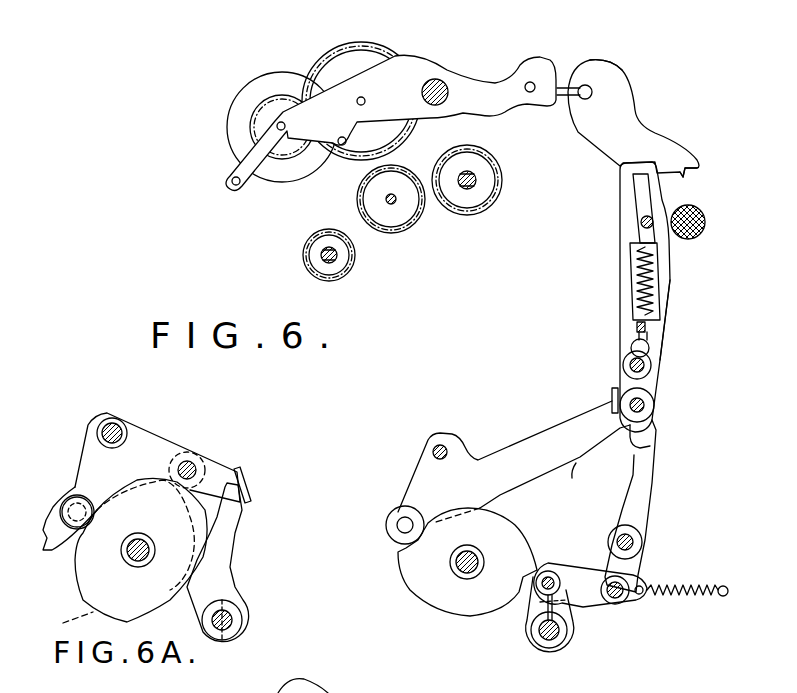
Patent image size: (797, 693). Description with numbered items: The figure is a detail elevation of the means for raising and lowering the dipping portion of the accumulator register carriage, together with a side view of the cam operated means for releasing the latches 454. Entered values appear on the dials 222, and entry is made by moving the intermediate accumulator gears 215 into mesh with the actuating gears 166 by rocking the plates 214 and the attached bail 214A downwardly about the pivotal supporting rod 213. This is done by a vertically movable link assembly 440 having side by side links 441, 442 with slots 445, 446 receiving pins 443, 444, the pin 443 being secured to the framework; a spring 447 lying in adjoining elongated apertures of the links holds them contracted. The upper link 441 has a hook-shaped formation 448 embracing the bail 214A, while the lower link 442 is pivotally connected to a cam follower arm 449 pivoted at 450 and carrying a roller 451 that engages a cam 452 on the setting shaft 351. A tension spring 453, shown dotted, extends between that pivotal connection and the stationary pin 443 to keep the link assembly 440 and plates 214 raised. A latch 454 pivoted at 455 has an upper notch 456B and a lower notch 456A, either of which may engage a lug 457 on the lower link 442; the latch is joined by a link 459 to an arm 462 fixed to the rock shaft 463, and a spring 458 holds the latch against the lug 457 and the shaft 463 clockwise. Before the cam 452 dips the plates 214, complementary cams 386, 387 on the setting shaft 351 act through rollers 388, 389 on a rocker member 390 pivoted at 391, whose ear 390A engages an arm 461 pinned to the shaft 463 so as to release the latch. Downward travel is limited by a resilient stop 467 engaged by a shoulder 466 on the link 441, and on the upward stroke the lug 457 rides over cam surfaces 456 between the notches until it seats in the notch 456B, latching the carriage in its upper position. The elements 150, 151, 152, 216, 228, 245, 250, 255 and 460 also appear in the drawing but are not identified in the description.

In FIG. 6, the gear wheel 150 is at (478, 180).
In FIG. 6, the gear wheel 151 is at (321, 255).
In FIG. 6, the gear shaft 152 is at (386, 199).
In FIG. 6, the actuating gears 166 is at (403, 229).
In FIG. 6, the pivotal supporting rod 213 is at (232, 183).
In FIG. 6, the plates 214 is at (448, 72).
In FIG. 6, the bail 214A is at (558, 68).
In FIG. 6, the intermediate accumulator gears 215 is at (330, 52).
In FIG. 6, the pivot pin 216 is at (277, 126).
In FIG. 6, the dials 222 is at (240, 92).
In FIG. 6, the hub ring 228 is at (252, 133).
In FIG. 6, the pin 245 is at (365, 97).
In FIG. 6, the stud 250 is at (447, 101).
In FIG. 6, the pin 255 is at (531, 82).
In FIG. 6, the setting shaft 351 is at (455, 568).
In FIG. 6A, the setting shaft 351 is at (129, 556).
In FIG. 6A, the cam 386 is at (80, 594).
In FIG. 6A, the cam 387 is at (90, 618).
In FIG. 6A, the roller 388 is at (67, 500).
In FIG. 6A, the roller 389 is at (192, 460).
In FIG. 6A, the rocker member 390 is at (158, 440).
In FIG. 6A, the ear 390A is at (249, 501).
In FIG. 6A, the pivot 391 is at (118, 428).
In FIG. 6, the link assembly 440 is at (620, 254).
In FIG. 6, the link 441 is at (640, 116).
In FIG. 6, the link 442 is at (656, 385).
In FIG. 6, the pin 443 is at (653, 222).
In FIG. 6, the pin 444 is at (645, 365).
In FIG. 6, the slot 445 is at (656, 183).
In FIG. 6, the slot 446 is at (649, 348).
In FIG. 6, the spring 447 is at (646, 282).
In FIG. 6, the hook-shaped formation 448 is at (623, 72).
In FIG. 6, the cam follower arm 449 is at (538, 432).
In FIG. 6, the pivot 450 is at (446, 448).
In FIG. 6, the roller 451 is at (386, 524).
In FIG. 6, the cam 452 is at (432, 590).
In FIG. 6, the tension spring 453 is at (647, 328).
In FIG. 6, the latch 454 is at (644, 490).
In FIG. 6, the pivot 455 is at (643, 541).
In FIG. 6, the cam surfaces 456 is at (621, 422).
In FIG. 6, the lower notch 456A is at (650, 446).
In FIG. 6, the upper notch 456B is at (570, 485).
In FIG. 6, the lug 457 is at (612, 396).
In FIG. 6, the spring 458 is at (700, 600).
In FIG. 6, the link 459 is at (586, 605).
In FIG. 6, the pin 460 is at (620, 604).
In FIG. 6A, the arm 461 is at (234, 580).
In FIG. 6, the arm 462 is at (534, 612).
In FIG. 6, the rock shaft 463 is at (556, 637).
In FIG. 6A, the rock shaft 463 is at (233, 622).
In FIG. 6, the shoulder 466 is at (686, 172).
In FIG. 6, the resilient stop 467 is at (706, 219).